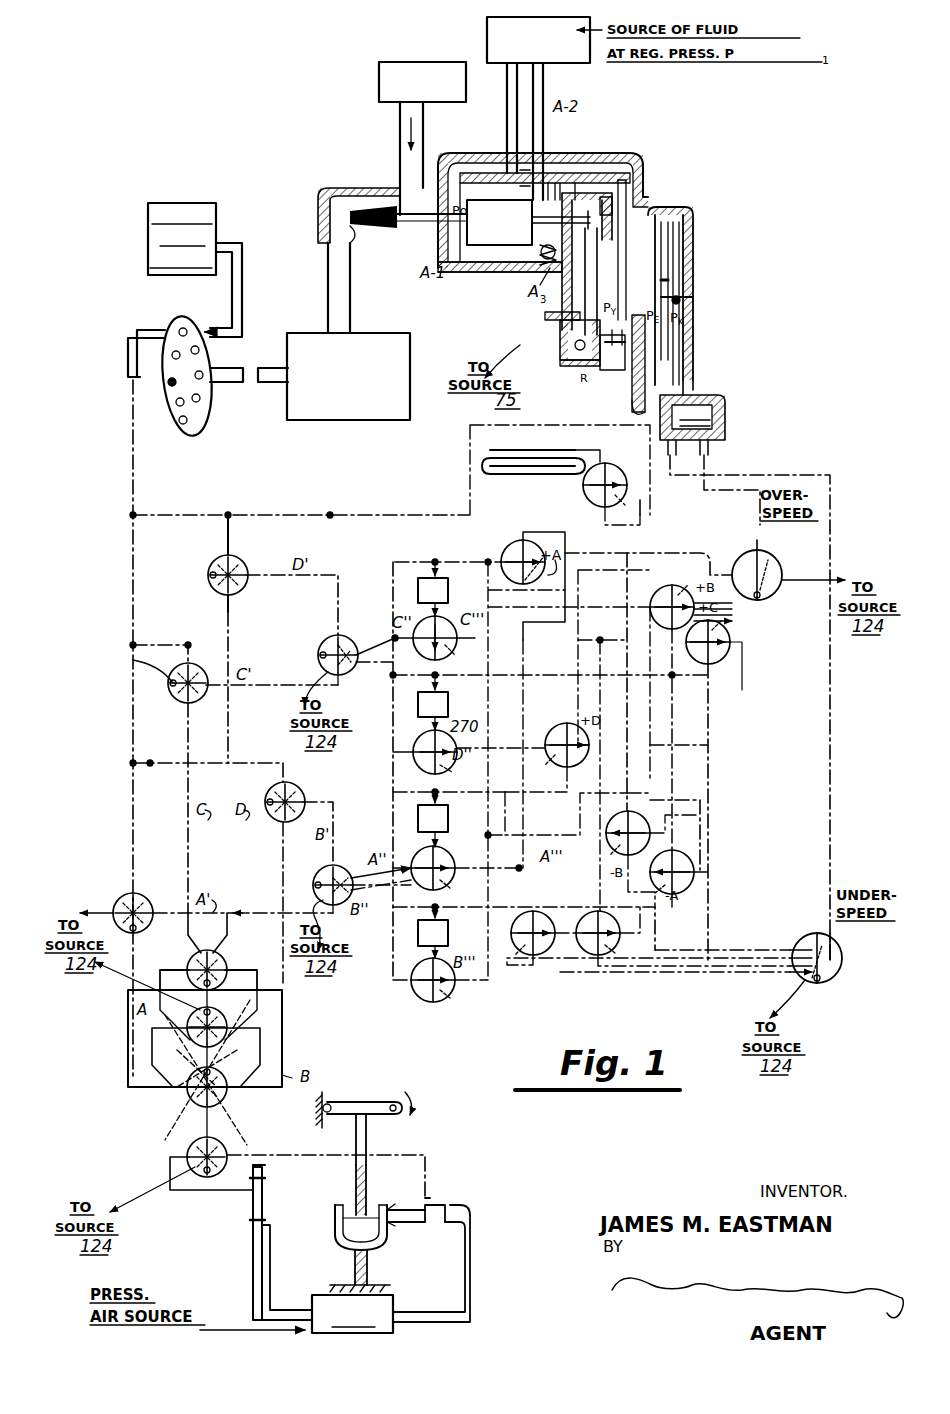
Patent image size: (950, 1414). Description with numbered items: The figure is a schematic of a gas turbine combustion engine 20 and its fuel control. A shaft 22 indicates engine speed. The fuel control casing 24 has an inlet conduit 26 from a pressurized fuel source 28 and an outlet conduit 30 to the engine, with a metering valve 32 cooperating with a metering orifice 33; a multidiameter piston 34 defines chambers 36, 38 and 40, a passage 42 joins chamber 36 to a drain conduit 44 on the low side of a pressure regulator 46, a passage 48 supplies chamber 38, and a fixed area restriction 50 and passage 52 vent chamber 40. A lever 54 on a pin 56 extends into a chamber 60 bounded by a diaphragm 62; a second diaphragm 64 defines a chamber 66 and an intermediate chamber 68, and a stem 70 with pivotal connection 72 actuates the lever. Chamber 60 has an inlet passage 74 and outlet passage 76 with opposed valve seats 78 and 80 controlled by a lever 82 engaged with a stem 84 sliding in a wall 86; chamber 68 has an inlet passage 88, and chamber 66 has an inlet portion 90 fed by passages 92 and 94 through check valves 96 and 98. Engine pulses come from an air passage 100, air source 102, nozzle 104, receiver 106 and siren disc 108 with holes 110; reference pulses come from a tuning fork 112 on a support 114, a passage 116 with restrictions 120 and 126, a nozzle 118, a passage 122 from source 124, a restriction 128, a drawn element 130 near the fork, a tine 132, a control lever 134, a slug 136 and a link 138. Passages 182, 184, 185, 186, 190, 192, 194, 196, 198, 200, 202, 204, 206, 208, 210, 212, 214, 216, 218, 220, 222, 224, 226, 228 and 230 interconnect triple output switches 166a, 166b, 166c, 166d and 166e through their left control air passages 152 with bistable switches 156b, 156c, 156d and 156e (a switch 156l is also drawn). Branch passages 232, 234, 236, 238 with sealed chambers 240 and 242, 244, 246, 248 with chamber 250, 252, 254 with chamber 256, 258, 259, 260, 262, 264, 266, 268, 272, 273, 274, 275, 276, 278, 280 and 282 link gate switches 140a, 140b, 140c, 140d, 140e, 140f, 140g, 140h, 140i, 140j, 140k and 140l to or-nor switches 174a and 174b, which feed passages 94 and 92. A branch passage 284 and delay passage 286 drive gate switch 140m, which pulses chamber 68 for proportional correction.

The combustion engine 20 is at (362, 393).
The shaft 22 is at (262, 385).
The casing 24 is at (640, 160).
The inlet conduit 26 is at (400, 170).
The pressurized source of fuel 28 is at (432, 96).
The outlet conduit 30 is at (328, 270).
The metering valve 32 is at (360, 210).
The metering orifice 33 is at (353, 245).
The multidiameter fluid pressure actuated piston 34 is at (497, 243).
The fluid chamber 36 is at (473, 190).
The fluid chamber 38 is at (499, 222).
The fluid chamber 40 is at (565, 183).
The passage 42 is at (500, 170).
The conduit 44 is at (543, 86).
The fluid pressure regulator 46 is at (487, 41).
The passage 48 is at (507, 86).
The fixed area restriction 50 is at (596, 160).
The passage 52 is at (563, 175).
The lever 54 is at (640, 215).
The pin 56 is at (601, 281).
The chamber 60 is at (618, 350).
The diaphragm 62 is at (695, 250).
The second diaphragm 64 is at (690, 228).
The chamber 66 is at (690, 287).
The intermediate chamber 68 is at (670, 277).
The stem 70 is at (688, 300).
The pivotal connection 72 is at (598, 345).
The inlet passage 74 is at (578, 323).
The outlet passage 76 is at (606, 358).
The valve seat 78 is at (560, 318).
The valve seat 80 is at (578, 365).
The lever 82 is at (628, 232).
The stem 84 is at (612, 203).
The wall 86 is at (550, 238).
The inlet passage 88 is at (642, 414).
The inlet portion 90 is at (692, 372).
The inlet passage 92 is at (658, 455).
The inlet passage 94 is at (710, 447).
The check valve 96 is at (704, 396).
The check valve 98 is at (724, 428).
The air passage 100 is at (242, 260).
The pressurized air source 102 is at (200, 203).
The discharge nozzle 104 is at (218, 328).
The flow receiver 106 is at (168, 330).
The siren disc 108 is at (200, 428).
The holes 110 is at (173, 388).
The tuning fork 112 is at (385, 1272).
The fixed support 114 is at (352, 1280).
The passage 116 is at (265, 1197).
The discharge nozzle 118 is at (395, 1212).
The restriction 120 is at (265, 1170).
The passage 122 is at (470, 1272).
The pressurized air source 124 is at (296, 1314).
The restriction 126 is at (262, 1225).
The restriction 128 is at (450, 1212).
The valve cup 130 is at (340, 1222).
The tine 132 is at (388, 1238).
The engine control lever 134 is at (370, 1102).
The tuning fork slug 136 is at (356, 1218).
The link 138 is at (368, 1142).
The gate switch 140a is at (415, 628).
The gate switch 140b is at (413, 752).
The gate switch 140c is at (445, 848).
The gate switch 140d is at (440, 1002).
The gate switch 140e is at (512, 550).
The gate switch 140f is at (660, 590).
The gate switch 140g is at (557, 730).
The gate switch 140h is at (720, 665).
The gate switch 140i is at (522, 962).
The gate switch 140j is at (635, 810).
The gate switch 140k is at (696, 850).
The gate switch 140l is at (592, 960).
The gate switch 140m is at (585, 494).
The left control air passage 152 is at (632, 505).
The bistable fluidic switch 156b is at (250, 1000).
The bistable switch 156c is at (227, 968).
The bistable switch 156d is at (328, 642).
The bistable switch 156e is at (345, 868).
The fluid element 156l is at (188, 1148).
The triple output fluidic switch 166a is at (182, 1150).
The triple output fluidic switch 166b is at (118, 905).
The triple output fluidic switch 166c is at (248, 572).
The triple output fluidic switch 166d is at (175, 703).
The triple output fluidic switch 166e is at (272, 820).
The or-nor switch 174a is at (778, 590).
The or-nor gate switch 174b is at (835, 982).
The passage 182 is at (208, 1192).
The passage 184 is at (428, 1180).
The passage 185 is at (225, 1130).
The passage 186 is at (133, 470).
The branch passage 190 is at (228, 535).
The branch passage 192 is at (152, 645).
The branch passage 194 is at (140, 768).
The passage 196 is at (165, 1090).
The passage 198 is at (245, 1112).
The passage 200 is at (250, 1068).
The passage 202 is at (128, 1062).
The branch passage 204 is at (128, 1003).
The branch passage 206 is at (262, 1025).
The passage 208 is at (128, 990).
The passage 210 is at (257, 990).
The passage 212 is at (188, 842).
The passage 214 is at (228, 738).
The passage 216 is at (340, 572).
The passage 218 is at (270, 685).
The passage 220 is at (385, 655).
The passage 222 is at (370, 680).
The passage 224 is at (238, 910).
The passage 226 is at (335, 805).
The passage 228 is at (382, 885).
The passage 230 is at (395, 985).
The branch passage 232 is at (472, 560).
The branch passage 234 is at (445, 675).
The branch passage 236 is at (428, 560).
The branch passage 238 is at (440, 702).
The sealed chamber 240 is at (434, 589).
The sealed chamber 242 is at (434, 702).
The branch passage 244 is at (455, 792).
The passage 246 is at (600, 580).
The branch passage 248 is at (445, 779).
The sealed chamber 250 is at (434, 819).
The branch passage 252 is at (524, 912).
The branch passage 254 is at (442, 915).
The sealed chamber 256 is at (434, 932).
The passage 258 is at (582, 640).
The branch passage 259 is at (700, 812).
The branch passage 260 is at (564, 771).
The passage 262 is at (730, 958).
The branch passage 264 is at (707, 744).
The passage 266 is at (665, 930).
The passage 268 is at (720, 778).
The branch passage 272 is at (501, 736).
The passage 273 is at (665, 975).
The passage 274 is at (530, 655).
The passage 275 is at (715, 975).
The passage 276 is at (742, 650).
The branch passage 278 is at (565, 542).
The passage 280 is at (628, 565).
The passage 282 is at (716, 577).
The branch passage 284 is at (325, 515).
The delay passage 286 is at (490, 455).